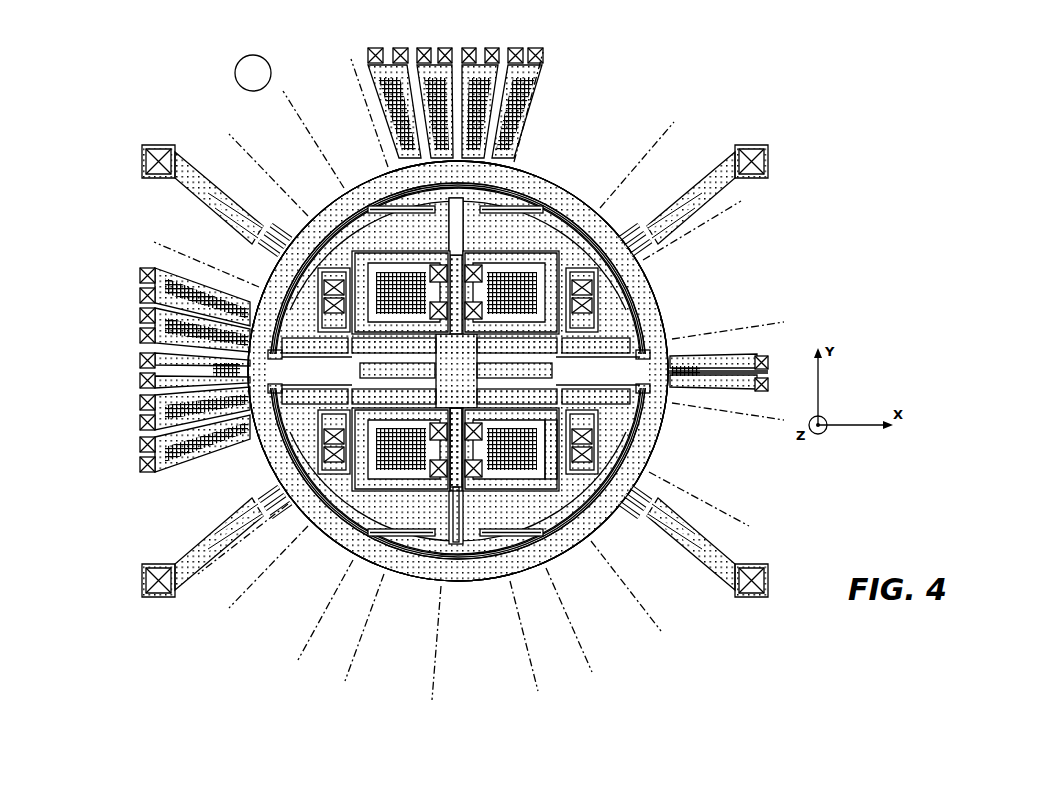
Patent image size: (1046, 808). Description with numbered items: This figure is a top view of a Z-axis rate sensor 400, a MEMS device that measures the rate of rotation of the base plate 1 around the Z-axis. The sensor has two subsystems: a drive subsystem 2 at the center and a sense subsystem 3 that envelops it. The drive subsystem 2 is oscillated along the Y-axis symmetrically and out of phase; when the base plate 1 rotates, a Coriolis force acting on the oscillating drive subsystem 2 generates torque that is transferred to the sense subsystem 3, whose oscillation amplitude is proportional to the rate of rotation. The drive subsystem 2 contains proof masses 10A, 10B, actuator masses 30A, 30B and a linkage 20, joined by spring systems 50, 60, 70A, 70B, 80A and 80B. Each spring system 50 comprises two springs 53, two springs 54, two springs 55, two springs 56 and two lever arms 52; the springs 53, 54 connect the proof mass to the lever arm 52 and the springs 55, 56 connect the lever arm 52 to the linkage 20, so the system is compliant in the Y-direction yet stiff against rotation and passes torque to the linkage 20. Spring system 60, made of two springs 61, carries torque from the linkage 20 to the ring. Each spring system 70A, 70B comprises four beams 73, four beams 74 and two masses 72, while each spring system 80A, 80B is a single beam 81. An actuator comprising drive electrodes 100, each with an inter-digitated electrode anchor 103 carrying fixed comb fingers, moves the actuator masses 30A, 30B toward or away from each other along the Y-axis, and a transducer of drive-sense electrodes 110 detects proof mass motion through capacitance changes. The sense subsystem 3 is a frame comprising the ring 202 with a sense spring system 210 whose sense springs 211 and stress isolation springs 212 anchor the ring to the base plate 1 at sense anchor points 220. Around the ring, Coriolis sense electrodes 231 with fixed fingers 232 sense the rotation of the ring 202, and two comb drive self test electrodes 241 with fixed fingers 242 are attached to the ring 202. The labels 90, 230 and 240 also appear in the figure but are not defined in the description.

The base plate 1 is at (253, 73).
The drive subsystem 2 is at (458, 371).
The sense subsystem 3 is at (252, 185).
The proof mass 10A is at (598, 245).
The proof mass 10B is at (318, 500).
The linkage 20 is at (640, 437).
The actuator mass 30A is at (517, 212).
The actuator mass 30B is at (400, 533).
The spring system 50 is at (592, 242).
The lever arm 52 is at (560, 247).
The spring 53 is at (457, 262).
The spring 54 is at (320, 300).
The spring 55 is at (560, 415).
The spring 56 is at (555, 398).
The spring system 60 is at (607, 369).
The spring 61 is at (640, 383).
The spring system 70A is at (447, 262).
The spring system 70B is at (463, 470).
The mass 72 is at (593, 513).
The beam 73 is at (600, 500).
The beam 74 is at (462, 520).
The spring system 80A is at (463, 255).
The beam 81 is at (463, 255).
The spring system 80B is at (452, 470).
The comb electrode 90 is at (522, 465).
The drive electrodes 100 is at (555, 455).
The inter-digitated electrode anchor 103 is at (420, 480).
The drive-sense electrodes 110 is at (642, 274).
The ring 202 is at (655, 320).
The sense spring system 210 is at (272, 118).
The sense spring 211 is at (695, 550).
The stress isolation spring 212 is at (657, 493).
The sense anchor point 220 is at (750, 158).
The comb drive group 230 is at (130, 283).
The Coriolis sense electrode 231 is at (512, 100).
The fixed fingers 232 is at (173, 428).
The sense electrode 240 is at (125, 364).
The comb drive self test electrode 241 is at (220, 368).
The fixed fingers 242 is at (180, 380).
The Z-axis rate sensor 400 is at (846, 92).